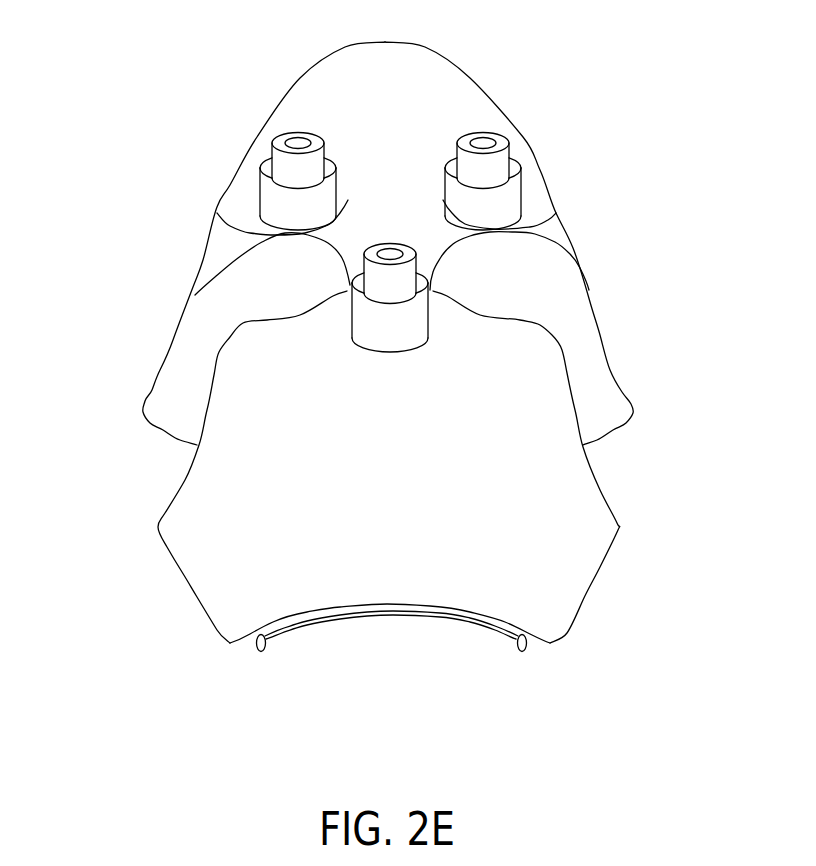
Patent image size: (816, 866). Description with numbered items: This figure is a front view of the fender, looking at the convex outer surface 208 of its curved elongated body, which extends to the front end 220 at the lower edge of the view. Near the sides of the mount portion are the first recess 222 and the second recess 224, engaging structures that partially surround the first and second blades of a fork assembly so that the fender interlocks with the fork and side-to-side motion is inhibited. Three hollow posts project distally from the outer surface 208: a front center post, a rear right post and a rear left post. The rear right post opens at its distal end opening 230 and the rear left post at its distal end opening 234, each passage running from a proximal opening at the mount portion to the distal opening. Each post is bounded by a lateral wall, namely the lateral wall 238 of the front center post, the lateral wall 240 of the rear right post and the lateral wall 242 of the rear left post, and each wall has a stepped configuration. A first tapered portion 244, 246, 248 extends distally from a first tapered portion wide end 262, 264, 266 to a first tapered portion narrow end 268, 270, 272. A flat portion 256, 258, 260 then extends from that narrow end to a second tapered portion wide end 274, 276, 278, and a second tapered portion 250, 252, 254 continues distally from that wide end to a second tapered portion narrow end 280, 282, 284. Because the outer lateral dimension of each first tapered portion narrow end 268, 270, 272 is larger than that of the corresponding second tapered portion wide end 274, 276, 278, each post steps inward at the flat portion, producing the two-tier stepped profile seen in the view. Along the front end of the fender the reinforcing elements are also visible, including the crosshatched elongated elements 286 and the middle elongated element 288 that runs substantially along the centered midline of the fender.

The outer surface 208 is at (376, 377).
The front end 220 is at (363, 615).
The first recess 222 is at (168, 466).
The second recess 224 is at (607, 453).
The distal end opening 230 is at (293, 130).
The distal end opening 234 is at (500, 133).
The lateral wall 238 is at (350, 242).
The lateral wall 240 is at (345, 137).
The lateral wall 242 is at (436, 137).
The first tapered portion 244 is at (370, 333).
The first tapered portion 246 is at (195, 295).
The first tapered portion 248 is at (477, 210).
The second tapered portion 250 is at (413, 300).
The second tapered portion 252 is at (313, 163).
The second tapered portion 254 is at (467, 160).
The flat portion 256 is at (400, 277).
The flat portion 258 is at (262, 158).
The flat portion 260 is at (517, 157).
The first tapered portion wide end 262 is at (400, 303).
The first tapered portion wide end 264 is at (297, 210).
The first tapered portion wide end 266 is at (520, 204).
The first tapered portion narrow end 268 is at (402, 283).
The first tapered portion narrow end 270 is at (261, 183).
The first tapered portion narrow end 272 is at (512, 185).
The second tapered portion wide end 274 is at (413, 297).
The second tapered portion wide end 276 is at (262, 179).
The second tapered portion wide end 278 is at (515, 176).
The second tapered portion narrow end 280 is at (417, 248).
The second tapered portion narrow end 282 is at (268, 165).
The second tapered portion narrow end 284 is at (510, 157).
The crosshatched elongated elements 286 is at (260, 652).
The middle elongated element 288 is at (390, 617).